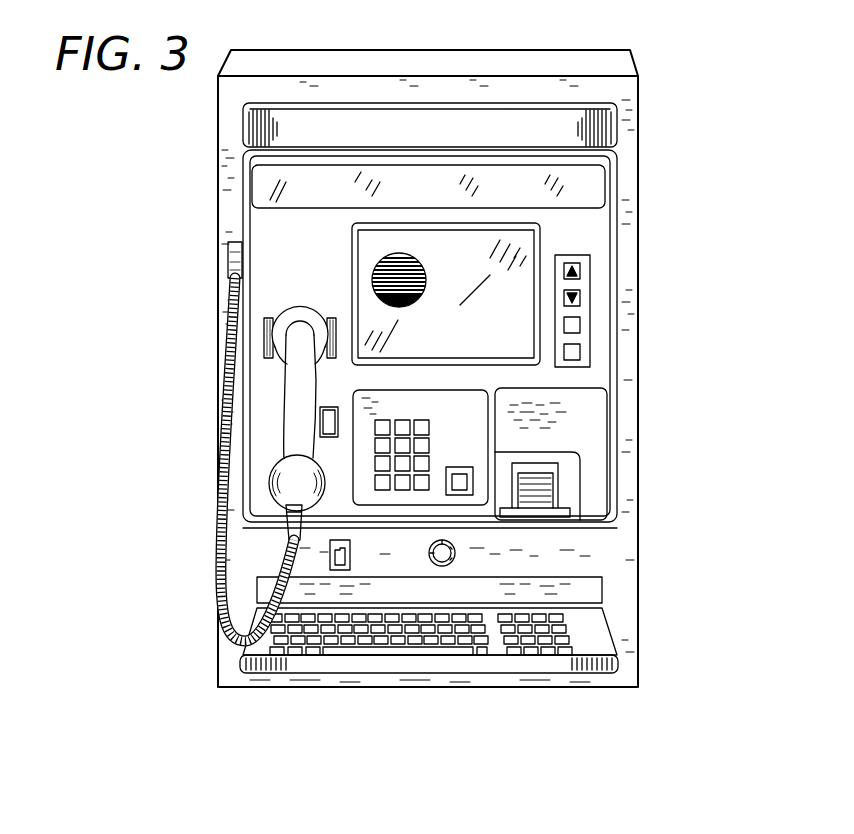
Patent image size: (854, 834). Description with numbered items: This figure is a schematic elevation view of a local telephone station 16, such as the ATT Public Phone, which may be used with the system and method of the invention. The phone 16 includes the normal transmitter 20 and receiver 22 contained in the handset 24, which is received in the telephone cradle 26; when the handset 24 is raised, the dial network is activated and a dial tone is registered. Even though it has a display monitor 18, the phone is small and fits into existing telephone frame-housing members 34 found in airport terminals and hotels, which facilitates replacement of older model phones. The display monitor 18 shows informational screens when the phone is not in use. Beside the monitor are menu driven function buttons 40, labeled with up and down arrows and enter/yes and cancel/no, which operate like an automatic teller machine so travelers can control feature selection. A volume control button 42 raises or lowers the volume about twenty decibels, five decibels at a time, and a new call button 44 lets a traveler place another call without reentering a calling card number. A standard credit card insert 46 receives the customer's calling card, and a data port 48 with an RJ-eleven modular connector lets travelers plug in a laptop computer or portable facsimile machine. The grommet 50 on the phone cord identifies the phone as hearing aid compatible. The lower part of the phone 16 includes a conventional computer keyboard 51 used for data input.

The local telephone station 16 is at (441, 350).
The display monitor 18 is at (525, 248).
The transmitter 20 is at (295, 483).
The receiver 22 is at (300, 340).
The handset 24 is at (235, 400).
The telephone cradle 26 is at (328, 318).
The telephone frame-housing member 34 is at (478, 58).
The menu driven function buttons 40 is at (590, 277).
The volume control button 42 is at (328, 410).
The new call button 44 is at (459, 467).
The credit card insert 46 is at (545, 488).
The data port 48 is at (361, 552).
The grommet 50 is at (288, 523).
The computer keyboard 51 is at (565, 628).